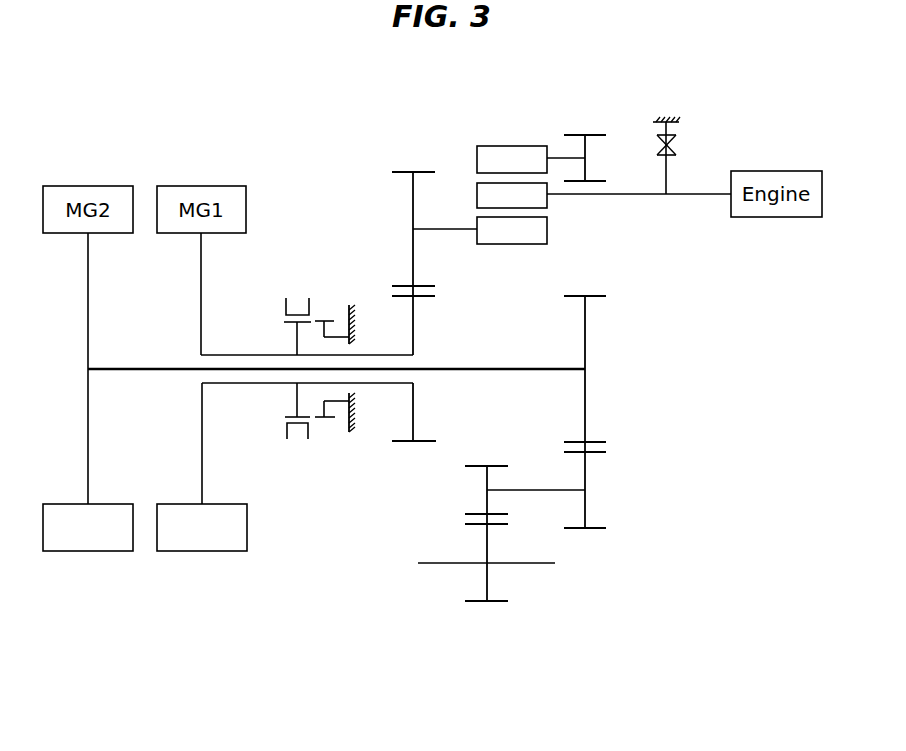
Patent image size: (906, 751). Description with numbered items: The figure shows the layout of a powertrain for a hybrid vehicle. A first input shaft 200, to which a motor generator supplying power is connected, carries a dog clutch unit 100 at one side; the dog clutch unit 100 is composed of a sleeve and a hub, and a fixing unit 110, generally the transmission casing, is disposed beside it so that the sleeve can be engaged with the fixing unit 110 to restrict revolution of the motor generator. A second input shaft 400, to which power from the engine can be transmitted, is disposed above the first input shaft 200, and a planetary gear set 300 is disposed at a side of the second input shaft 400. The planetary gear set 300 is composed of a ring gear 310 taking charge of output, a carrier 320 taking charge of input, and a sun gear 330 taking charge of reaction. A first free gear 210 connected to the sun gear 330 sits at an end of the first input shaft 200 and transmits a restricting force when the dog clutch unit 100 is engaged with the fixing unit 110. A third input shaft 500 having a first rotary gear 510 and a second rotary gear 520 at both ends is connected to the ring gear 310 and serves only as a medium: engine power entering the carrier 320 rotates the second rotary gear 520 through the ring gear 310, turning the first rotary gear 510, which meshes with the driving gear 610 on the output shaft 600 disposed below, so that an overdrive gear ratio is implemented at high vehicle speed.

The dog clutch unit 100 is at (297, 282).
The fixing unit 110 is at (349, 303).
The first input shaft 200 is at (137, 367).
The first free gear 210 is at (400, 443).
The planetary gear set 300 is at (514, 171).
The ring gear 310 is at (513, 152).
The carrier 320 is at (547, 198).
The sun gear 330 is at (542, 236).
The second input shaft 400 is at (702, 192).
The third input shaft 500 is at (537, 487).
The first rotary gear 510 is at (478, 462).
The second rotary gear 520 is at (603, 440).
The output shaft 600 is at (538, 565).
The driving gear 610 is at (470, 603).